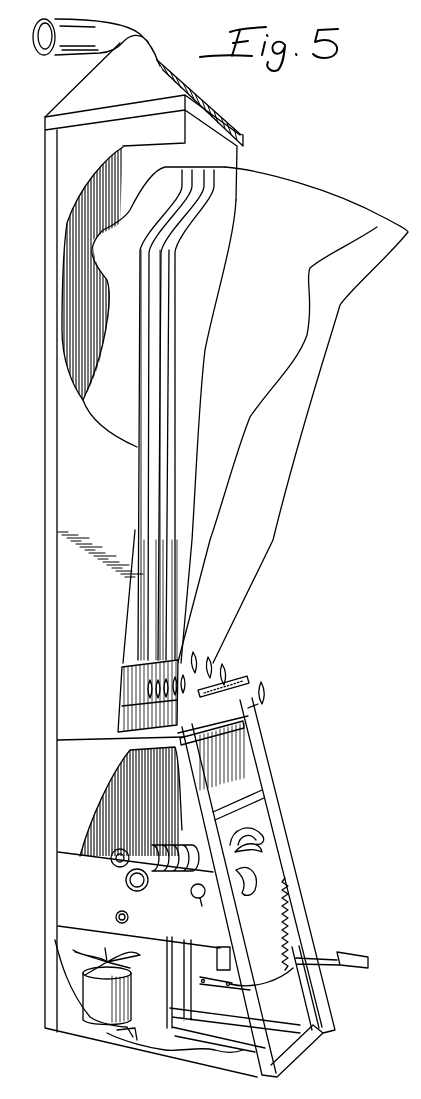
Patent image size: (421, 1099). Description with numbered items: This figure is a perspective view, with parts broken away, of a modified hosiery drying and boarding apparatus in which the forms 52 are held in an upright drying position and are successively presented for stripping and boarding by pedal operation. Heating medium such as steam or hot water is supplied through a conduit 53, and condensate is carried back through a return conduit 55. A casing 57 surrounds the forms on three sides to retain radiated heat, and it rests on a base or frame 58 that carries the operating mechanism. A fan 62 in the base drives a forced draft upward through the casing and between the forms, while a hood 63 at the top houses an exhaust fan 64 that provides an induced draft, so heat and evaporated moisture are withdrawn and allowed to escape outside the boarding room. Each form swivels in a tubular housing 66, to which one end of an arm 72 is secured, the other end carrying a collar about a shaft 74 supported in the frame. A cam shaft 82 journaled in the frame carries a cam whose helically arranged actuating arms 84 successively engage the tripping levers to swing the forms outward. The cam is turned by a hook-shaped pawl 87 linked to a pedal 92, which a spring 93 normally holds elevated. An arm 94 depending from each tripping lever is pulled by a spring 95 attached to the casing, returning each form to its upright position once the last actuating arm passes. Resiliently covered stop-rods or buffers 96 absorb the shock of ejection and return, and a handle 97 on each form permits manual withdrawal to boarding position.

The forms 52 is at (163, 297).
The conduit 53 is at (111, 861).
The return conduit 55 is at (129, 917).
The casing 57 is at (220, 298).
The base or frame 58 is at (48, 975).
The fan 62 is at (124, 965).
The hood 63 is at (203, 100).
The exhaust fan 64 is at (150, 38).
The tubular housing 66 is at (234, 682).
The arm 72 is at (248, 688).
The shaft 74 is at (127, 887).
The cam shaft 82 is at (195, 906).
The actuating arms 84 is at (257, 886).
The hook-shaped pawl 87 is at (262, 832).
The pedal 92 is at (350, 955).
The spring 93 is at (282, 929).
The arm 94 is at (166, 1004).
The spring 95 is at (197, 1038).
The stop-rods or buffers 96 is at (250, 730).
The handle 97 is at (267, 702).